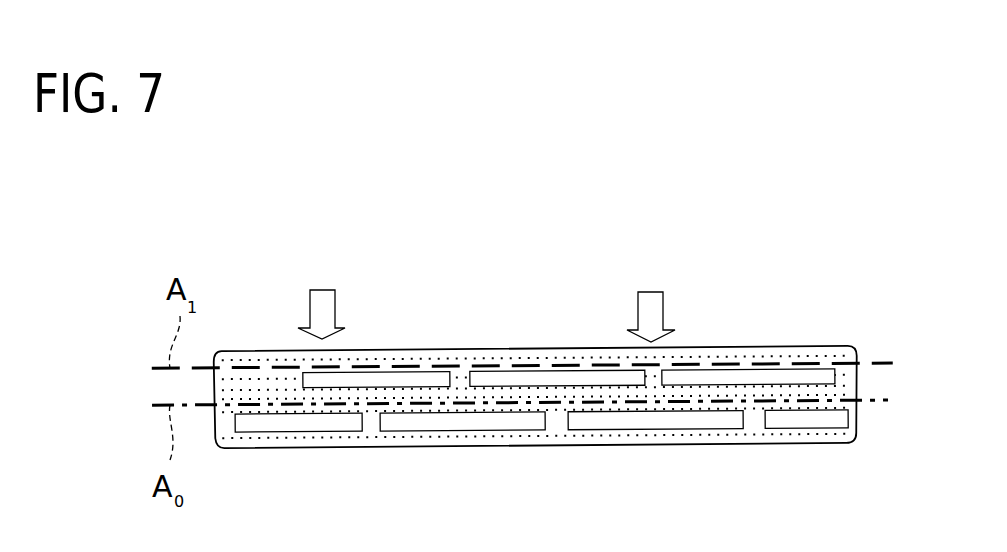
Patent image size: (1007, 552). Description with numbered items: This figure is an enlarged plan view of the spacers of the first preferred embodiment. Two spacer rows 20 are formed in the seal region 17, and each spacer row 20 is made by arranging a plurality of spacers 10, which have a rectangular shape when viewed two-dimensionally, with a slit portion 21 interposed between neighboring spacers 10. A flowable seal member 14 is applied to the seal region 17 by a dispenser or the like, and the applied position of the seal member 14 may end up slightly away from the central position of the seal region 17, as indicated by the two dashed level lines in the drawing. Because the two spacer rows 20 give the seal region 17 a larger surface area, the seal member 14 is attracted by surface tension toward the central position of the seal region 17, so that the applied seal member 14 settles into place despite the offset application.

The spacers 10 is at (793, 422).
The seal member 14 is at (502, 360).
The seal region 17 is at (557, 450).
The spacer rows 20 is at (338, 378).
The slit portion 21 is at (753, 424).